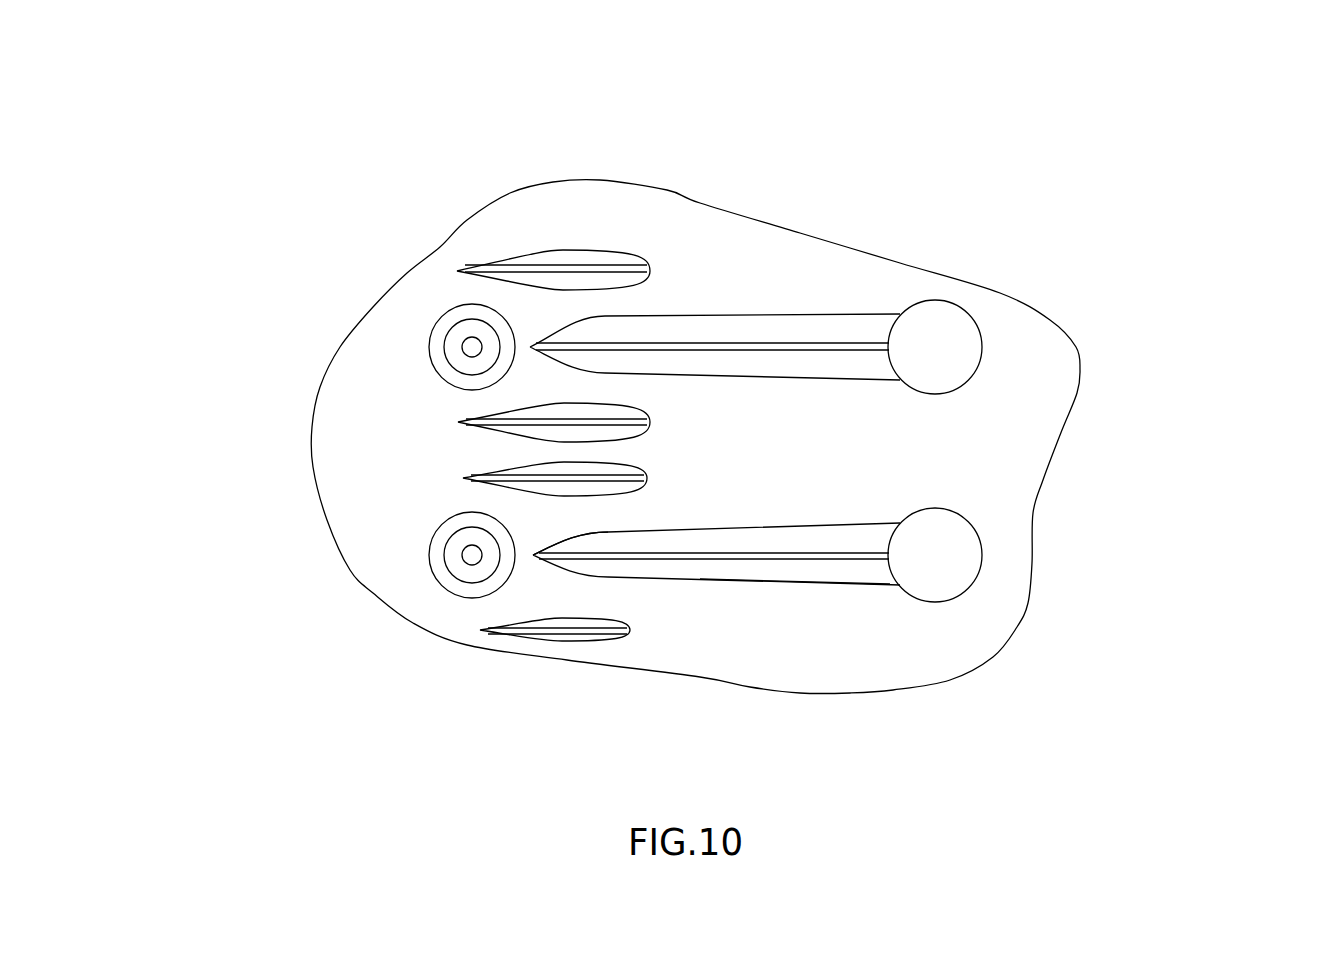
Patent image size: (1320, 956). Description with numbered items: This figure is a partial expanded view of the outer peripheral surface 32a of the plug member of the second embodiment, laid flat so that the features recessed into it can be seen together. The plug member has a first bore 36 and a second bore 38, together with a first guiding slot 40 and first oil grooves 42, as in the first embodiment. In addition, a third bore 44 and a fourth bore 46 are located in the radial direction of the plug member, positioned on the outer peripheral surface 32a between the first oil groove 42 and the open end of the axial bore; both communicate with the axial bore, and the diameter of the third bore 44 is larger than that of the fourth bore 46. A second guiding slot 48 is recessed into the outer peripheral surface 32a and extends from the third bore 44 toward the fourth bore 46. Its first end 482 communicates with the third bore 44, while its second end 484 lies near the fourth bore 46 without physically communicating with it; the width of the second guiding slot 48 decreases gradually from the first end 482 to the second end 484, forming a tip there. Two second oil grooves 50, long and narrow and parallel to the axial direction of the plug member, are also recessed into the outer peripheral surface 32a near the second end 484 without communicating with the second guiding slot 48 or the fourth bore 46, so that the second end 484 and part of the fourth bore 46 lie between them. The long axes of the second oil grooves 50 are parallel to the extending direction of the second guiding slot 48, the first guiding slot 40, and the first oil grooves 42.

The outer peripheral surface 32a is at (1032, 393).
The first bore 36 is at (937, 300).
The second bore 38 is at (447, 313).
The first guiding slot 40 is at (796, 316).
The first oil groove 42 is at (601, 249).
The third bore 44 is at (983, 555).
The fourth bore 46 is at (445, 568).
The second guiding slot 48 is at (758, 580).
The first end 482 is at (878, 573).
The second end 484 is at (533, 557).
The second oil groove 50 is at (497, 472).